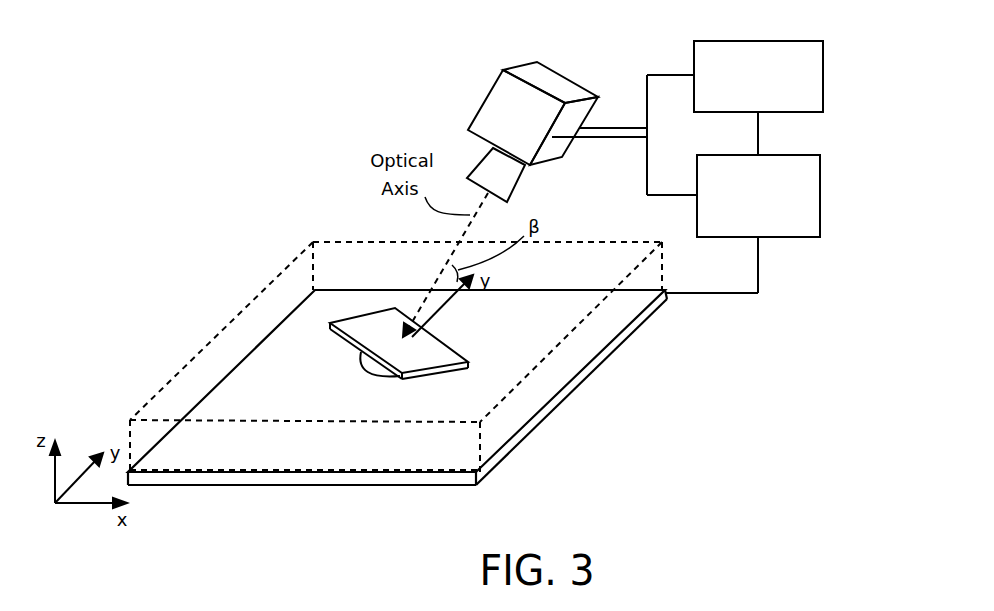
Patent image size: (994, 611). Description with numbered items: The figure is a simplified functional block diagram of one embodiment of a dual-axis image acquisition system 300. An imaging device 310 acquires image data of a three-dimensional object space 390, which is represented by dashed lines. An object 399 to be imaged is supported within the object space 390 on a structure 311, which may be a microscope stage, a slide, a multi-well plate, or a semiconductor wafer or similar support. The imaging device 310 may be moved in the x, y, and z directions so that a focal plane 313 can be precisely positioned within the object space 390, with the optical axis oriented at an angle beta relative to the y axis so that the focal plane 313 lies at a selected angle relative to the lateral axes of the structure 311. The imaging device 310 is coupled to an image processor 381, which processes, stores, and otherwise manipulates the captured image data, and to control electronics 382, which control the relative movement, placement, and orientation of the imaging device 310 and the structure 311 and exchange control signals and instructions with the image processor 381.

The dual-axis image acquisition system 300 is at (195, 285).
The imaging device 310 is at (475, 113).
The structure 311 is at (507, 457).
The focal plane 313 is at (330, 327).
The image processor 381 is at (698, 40).
The control electronics 382 is at (810, 155).
The object space 390 is at (173, 344).
The object 399 is at (372, 366).